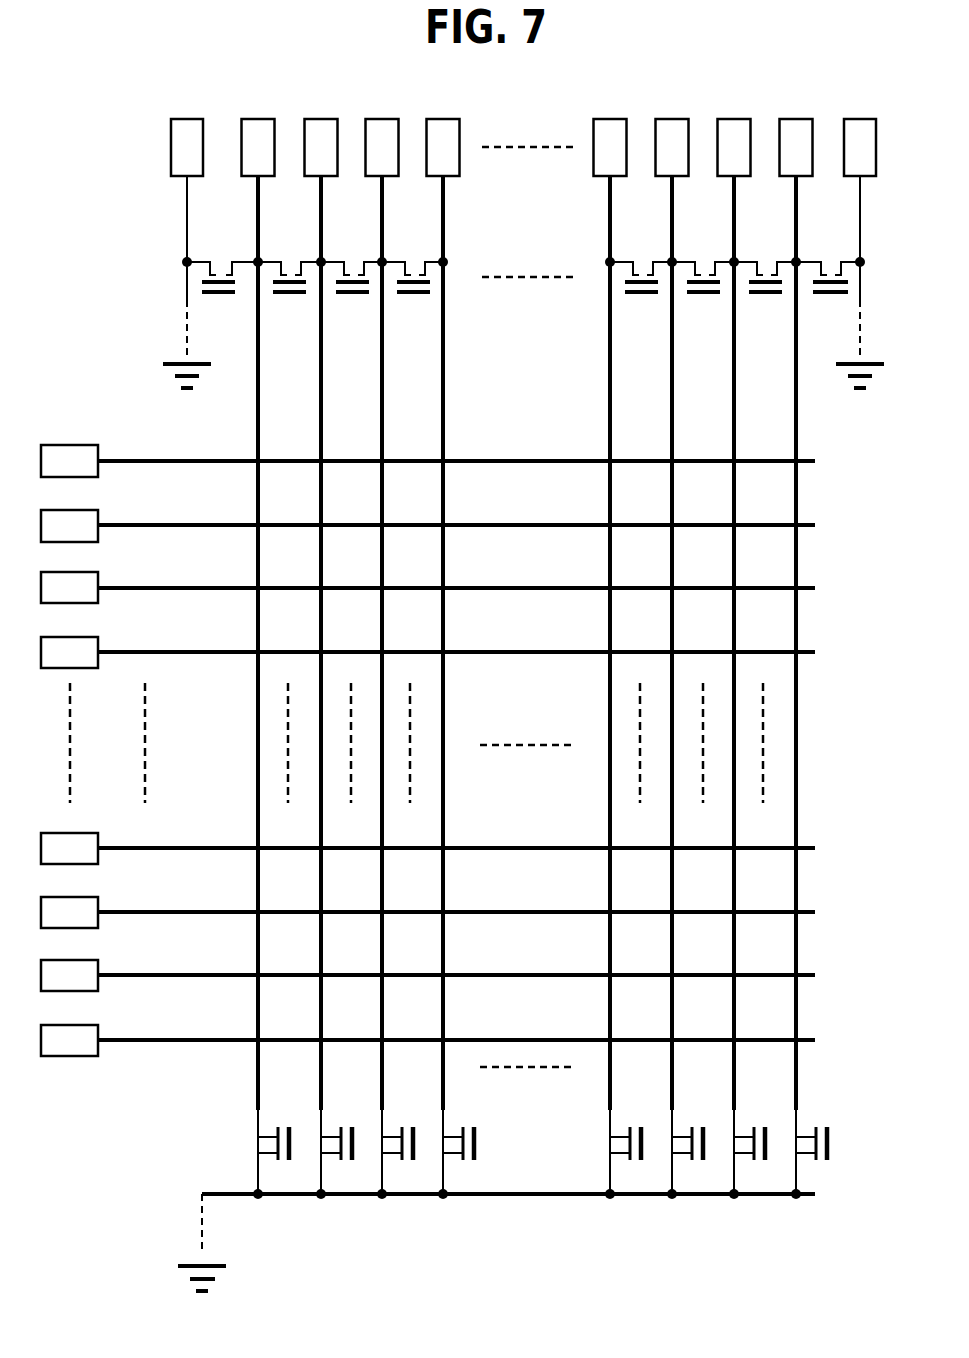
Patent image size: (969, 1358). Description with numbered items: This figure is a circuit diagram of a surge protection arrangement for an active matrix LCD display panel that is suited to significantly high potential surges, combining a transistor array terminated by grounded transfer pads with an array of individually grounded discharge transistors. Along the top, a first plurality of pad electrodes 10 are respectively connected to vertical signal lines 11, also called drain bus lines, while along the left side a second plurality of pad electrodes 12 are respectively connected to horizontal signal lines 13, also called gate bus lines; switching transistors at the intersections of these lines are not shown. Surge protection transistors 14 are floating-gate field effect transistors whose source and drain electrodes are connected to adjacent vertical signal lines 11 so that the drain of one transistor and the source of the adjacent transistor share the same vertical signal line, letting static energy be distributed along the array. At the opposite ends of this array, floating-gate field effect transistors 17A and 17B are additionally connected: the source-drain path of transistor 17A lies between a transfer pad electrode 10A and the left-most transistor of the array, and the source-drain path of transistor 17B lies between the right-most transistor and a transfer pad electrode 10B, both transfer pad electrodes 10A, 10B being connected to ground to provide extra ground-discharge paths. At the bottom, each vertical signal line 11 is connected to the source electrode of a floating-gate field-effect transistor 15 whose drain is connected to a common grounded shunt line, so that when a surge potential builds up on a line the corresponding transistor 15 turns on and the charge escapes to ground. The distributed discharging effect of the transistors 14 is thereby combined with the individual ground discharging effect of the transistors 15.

The pad electrodes 10 is at (256, 118).
The transfer pad electrode 10A is at (188, 118).
The transfer pad electrode 10B is at (857, 118).
The vertical signal lines 11 is at (256, 750).
The pad electrodes 12 is at (66, 446).
The horizontal signal lines 13 is at (131, 458).
The surge protection transistors 14 is at (290, 258).
The floating-gate field-effect transistors 15 is at (284, 1125).
The floating-gate field effect transistor 17A is at (220, 258).
The floating-gate field effect transistor 17B is at (828, 258).